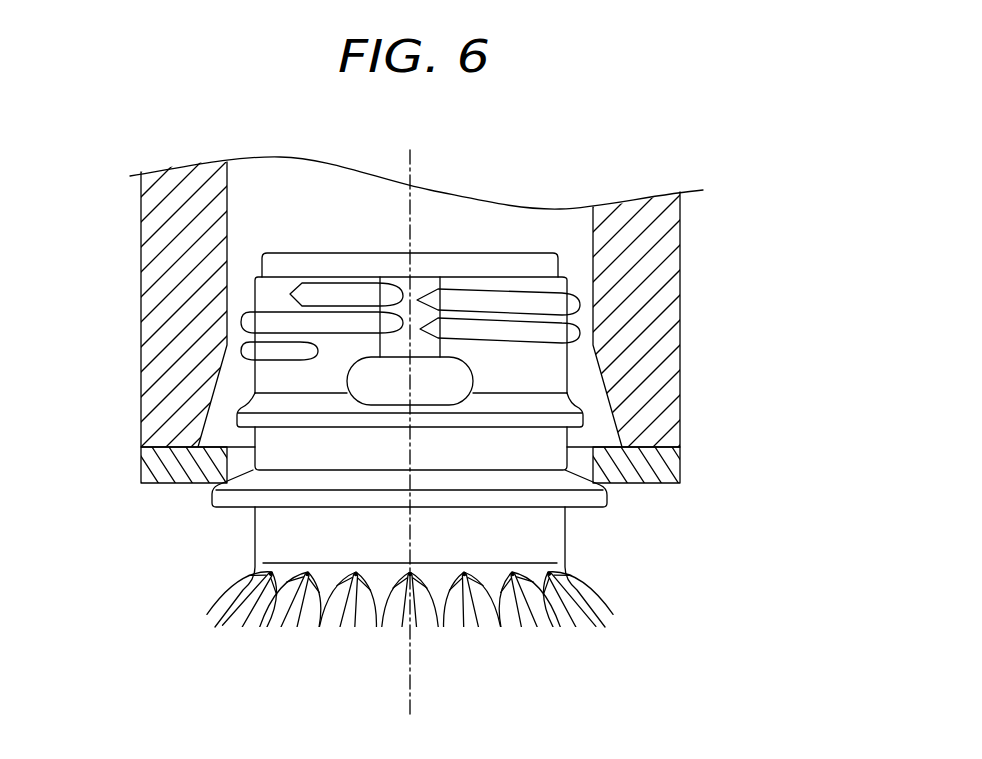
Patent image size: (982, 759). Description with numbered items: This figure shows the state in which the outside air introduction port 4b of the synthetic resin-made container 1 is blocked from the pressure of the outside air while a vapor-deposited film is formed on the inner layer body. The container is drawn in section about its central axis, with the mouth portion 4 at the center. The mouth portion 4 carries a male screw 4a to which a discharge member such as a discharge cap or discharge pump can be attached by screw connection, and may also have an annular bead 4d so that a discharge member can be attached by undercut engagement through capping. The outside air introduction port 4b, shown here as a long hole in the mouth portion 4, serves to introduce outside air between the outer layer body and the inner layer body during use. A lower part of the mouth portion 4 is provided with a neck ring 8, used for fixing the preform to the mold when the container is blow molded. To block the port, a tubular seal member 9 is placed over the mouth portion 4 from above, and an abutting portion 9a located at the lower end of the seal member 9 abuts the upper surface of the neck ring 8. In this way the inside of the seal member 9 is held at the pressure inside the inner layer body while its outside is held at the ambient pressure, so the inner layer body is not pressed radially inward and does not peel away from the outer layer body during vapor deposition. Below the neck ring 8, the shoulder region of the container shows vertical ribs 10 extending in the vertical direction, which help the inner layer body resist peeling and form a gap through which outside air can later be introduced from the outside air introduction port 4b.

The synthetic resin-made container 1 is at (418, 422).
The mouth portion 4 is at (409, 361).
The male screw 4a is at (578, 305).
The outside air introduction port 4b is at (375, 381).
The bead 4d is at (582, 421).
The neck ring 8 is at (601, 497).
The seal member 9 is at (692, 257).
The abutting portion 9a is at (598, 478).
The vertical rib 10 is at (542, 615).